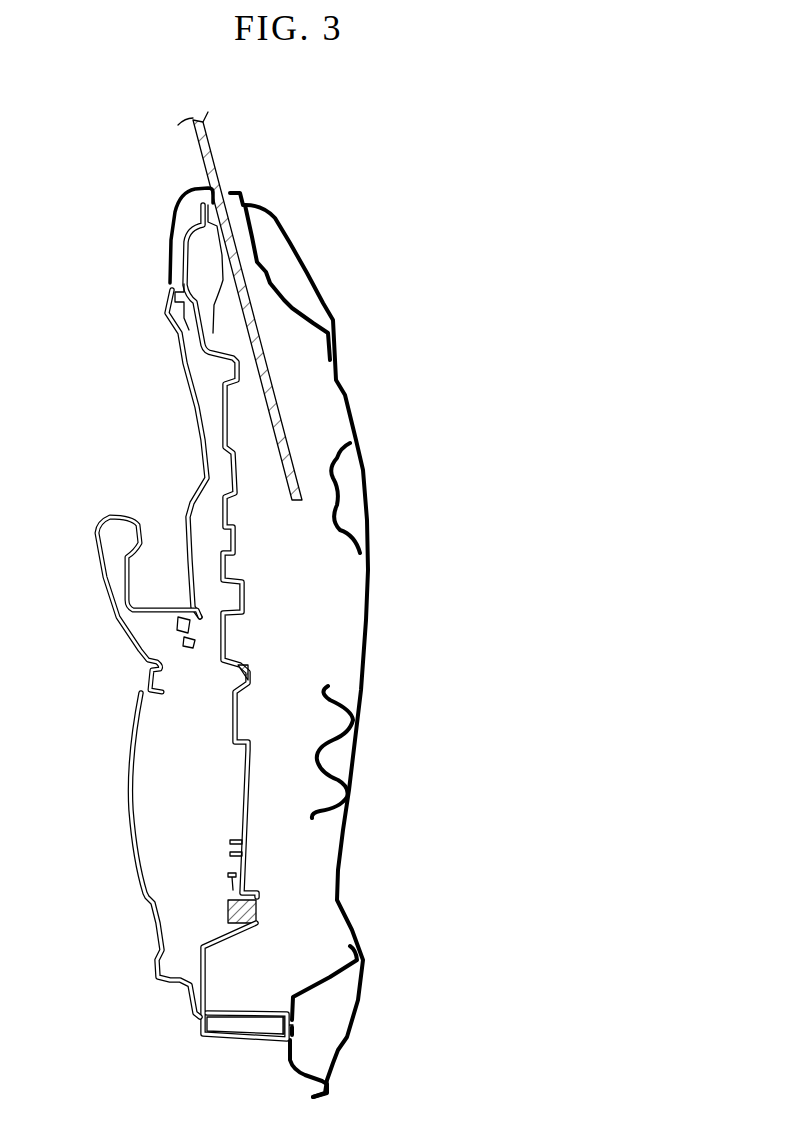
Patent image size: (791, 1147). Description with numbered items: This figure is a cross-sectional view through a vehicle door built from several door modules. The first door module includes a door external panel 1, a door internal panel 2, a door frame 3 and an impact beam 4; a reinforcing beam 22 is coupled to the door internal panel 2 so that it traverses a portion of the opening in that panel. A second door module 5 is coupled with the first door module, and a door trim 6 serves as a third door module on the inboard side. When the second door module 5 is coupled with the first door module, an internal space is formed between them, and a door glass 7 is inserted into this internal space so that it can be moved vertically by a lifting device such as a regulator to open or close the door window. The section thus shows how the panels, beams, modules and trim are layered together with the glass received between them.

The door external panel 1 is at (345, 390).
The door internal panel 2 is at (277, 287).
The door frame 3 is at (217, 249).
The impact beam 4 is at (340, 696).
The second door module 5 is at (243, 790).
The door trim 6 is at (128, 749).
The door glass 7 is at (218, 158).
The reinforcing beam 22 is at (340, 493).